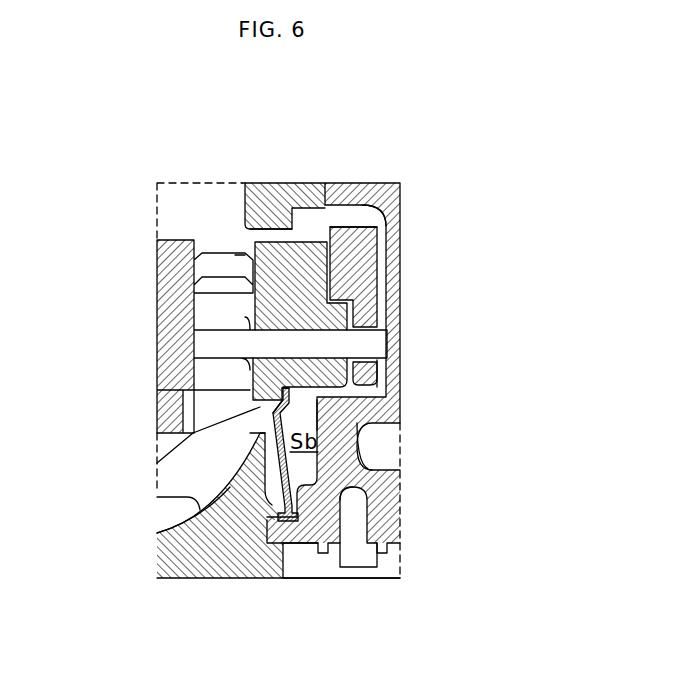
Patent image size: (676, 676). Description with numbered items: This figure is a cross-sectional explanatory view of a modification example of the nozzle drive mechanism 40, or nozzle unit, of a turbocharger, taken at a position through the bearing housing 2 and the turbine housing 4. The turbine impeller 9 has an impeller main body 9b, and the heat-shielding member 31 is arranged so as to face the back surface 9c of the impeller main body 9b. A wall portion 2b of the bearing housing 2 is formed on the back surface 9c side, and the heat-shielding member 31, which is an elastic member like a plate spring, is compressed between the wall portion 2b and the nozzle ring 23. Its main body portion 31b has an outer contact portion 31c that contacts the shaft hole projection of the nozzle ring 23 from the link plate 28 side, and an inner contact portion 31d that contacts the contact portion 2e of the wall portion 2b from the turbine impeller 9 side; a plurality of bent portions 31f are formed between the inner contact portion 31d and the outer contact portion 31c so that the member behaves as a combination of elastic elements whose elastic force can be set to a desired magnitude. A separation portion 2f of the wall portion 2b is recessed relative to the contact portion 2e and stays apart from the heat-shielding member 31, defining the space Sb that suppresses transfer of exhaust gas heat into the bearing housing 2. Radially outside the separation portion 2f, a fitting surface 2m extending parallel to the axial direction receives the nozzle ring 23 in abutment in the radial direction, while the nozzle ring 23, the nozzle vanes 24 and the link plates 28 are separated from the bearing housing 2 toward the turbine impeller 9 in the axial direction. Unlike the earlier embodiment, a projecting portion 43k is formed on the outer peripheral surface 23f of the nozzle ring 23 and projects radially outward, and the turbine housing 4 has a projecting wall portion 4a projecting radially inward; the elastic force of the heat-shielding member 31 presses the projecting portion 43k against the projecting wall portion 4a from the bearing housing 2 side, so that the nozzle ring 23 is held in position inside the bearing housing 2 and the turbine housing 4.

The bearing housing 2 is at (375, 206).
The wall portion 2b is at (335, 450).
The contact portion 2e is at (385, 505).
The separation portion 2f is at (370, 420).
The fitting surface 2m is at (380, 365).
The turbine housing 4 is at (247, 232).
The projecting wall portion 4a is at (241, 230).
The turbine impeller 9 is at (185, 515).
The impeller main body 9b is at (157, 497).
The back surface 9c is at (285, 498).
The nozzle ring 23 is at (345, 227).
The outer peripheral surface 23f is at (278, 235).
The nozzle vane 24 is at (227, 312).
The link plate 28 is at (380, 260).
The heat-shielding member 31 is at (345, 488).
The main body portion 31b is at (345, 500).
The outer contact portion 31c is at (380, 383).
The inner contact portion 31d is at (385, 537).
The bent portion 31f is at (281, 420).
The nozzle drive mechanism 40 is at (115, 140).
The projecting portion 43k is at (313, 217).